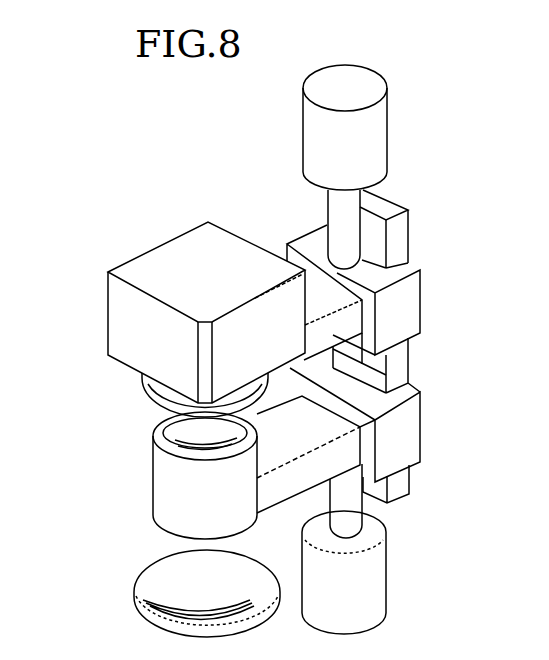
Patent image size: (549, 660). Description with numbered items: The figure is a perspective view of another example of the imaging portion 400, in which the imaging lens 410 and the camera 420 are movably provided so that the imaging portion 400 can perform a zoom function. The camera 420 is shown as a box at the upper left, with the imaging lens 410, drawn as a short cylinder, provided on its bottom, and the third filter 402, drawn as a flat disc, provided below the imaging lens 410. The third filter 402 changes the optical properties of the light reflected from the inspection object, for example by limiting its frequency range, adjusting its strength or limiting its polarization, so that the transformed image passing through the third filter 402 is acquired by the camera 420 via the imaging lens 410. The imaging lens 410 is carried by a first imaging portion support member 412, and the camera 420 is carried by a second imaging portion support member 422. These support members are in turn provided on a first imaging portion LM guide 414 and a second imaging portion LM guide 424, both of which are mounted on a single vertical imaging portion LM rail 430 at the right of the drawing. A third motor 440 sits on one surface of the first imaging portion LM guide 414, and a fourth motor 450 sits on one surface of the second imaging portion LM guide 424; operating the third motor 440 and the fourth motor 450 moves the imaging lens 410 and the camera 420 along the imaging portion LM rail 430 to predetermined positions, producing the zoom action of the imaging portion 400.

The imaging portion 400 is at (199, 172).
The third filter 402 is at (158, 558).
The imaging lens 410 is at (150, 468).
The first imaging portion support member 412 is at (307, 490).
The first imaging portion LM guide 414 is at (418, 441).
The camera 420 is at (107, 293).
The second imaging portion support member 422 is at (314, 286).
The second imaging portion LM guide 424 is at (421, 305).
The imaging portion LM rail 430 is at (408, 223).
The third motor 440 is at (387, 137).
The fourth motor 450 is at (380, 575).